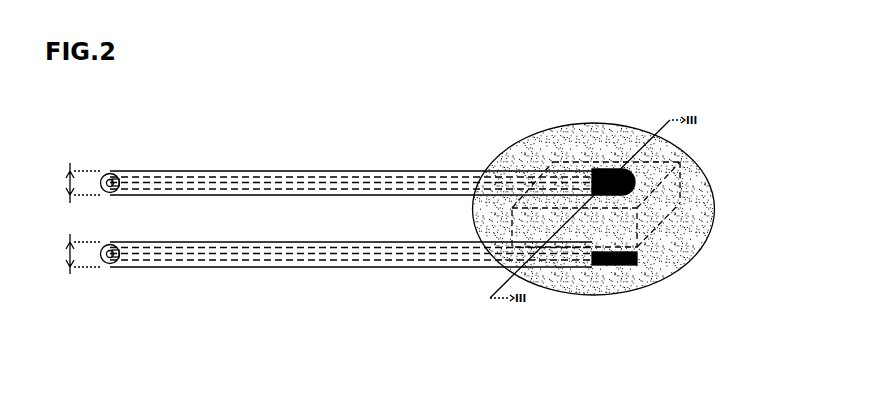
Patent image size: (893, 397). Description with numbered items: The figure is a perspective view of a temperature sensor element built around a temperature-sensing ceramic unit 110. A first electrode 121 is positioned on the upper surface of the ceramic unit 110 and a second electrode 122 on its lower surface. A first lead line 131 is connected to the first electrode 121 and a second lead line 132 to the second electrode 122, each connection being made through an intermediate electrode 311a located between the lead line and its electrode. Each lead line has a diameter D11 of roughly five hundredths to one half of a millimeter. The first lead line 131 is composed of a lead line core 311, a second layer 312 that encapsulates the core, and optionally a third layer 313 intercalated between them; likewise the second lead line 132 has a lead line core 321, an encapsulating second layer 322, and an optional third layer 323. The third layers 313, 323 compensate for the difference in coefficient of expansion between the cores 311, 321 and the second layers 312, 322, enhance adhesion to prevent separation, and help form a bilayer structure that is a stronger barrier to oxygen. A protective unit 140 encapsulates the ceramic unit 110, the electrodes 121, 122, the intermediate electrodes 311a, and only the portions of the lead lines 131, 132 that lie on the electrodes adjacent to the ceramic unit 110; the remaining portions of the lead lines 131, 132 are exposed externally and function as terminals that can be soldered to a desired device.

The first lead line 131 is at (347, 139).
The lead line core 311 is at (287, 171).
The third layer 313 is at (320, 177).
The second layer 312 is at (288, 106).
The second lead line 132 is at (347, 298).
The lead line core 321 is at (287, 267).
The third layer 323 is at (320, 254).
The second layer 322 is at (288, 328).
The protective unit 140 is at (522, 140).
The temperature-sensing ceramic unit 110 is at (715, 200).
The first electrode 121 is at (701, 170).
The second electrode 122 is at (712, 227).
The intermediate electrode 311a is at (690, 160).
The diameter D11 is at (71, 218).